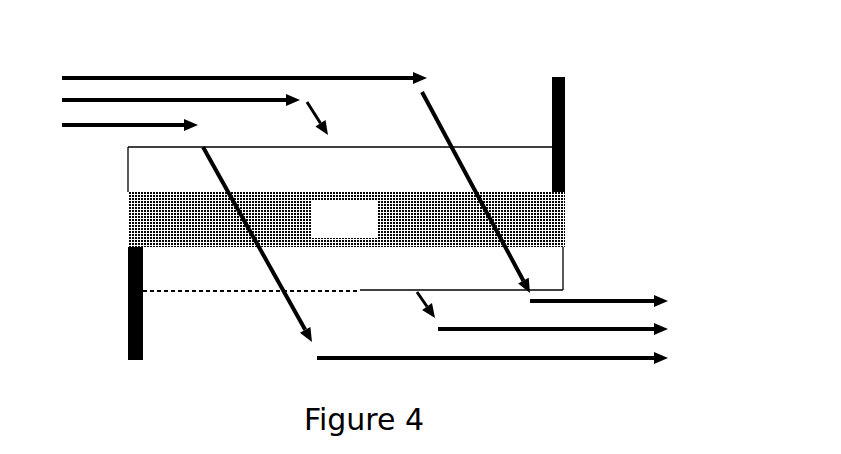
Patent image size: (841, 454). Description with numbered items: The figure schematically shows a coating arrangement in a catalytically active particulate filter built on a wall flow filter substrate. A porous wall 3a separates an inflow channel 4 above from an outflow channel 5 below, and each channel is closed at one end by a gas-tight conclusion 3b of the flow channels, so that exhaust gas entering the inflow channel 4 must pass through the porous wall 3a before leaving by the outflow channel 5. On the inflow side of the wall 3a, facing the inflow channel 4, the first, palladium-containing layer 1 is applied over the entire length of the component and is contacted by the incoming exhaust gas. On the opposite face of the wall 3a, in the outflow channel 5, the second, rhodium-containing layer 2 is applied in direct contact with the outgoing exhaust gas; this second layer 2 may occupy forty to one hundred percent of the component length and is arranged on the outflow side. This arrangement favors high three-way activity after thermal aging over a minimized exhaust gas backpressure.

The first, palladium-containing layer 1 is at (340, 169).
The second, rhodium-containing layer 2 is at (353, 269).
The porous wall of a wall flow filter substrate 3a is at (346, 219).
The gas-tight conclusion of the flow channels 3b is at (565, 125).
The inflow channel 4 is at (296, 182).
The outflow channel 5 is at (431, 255).